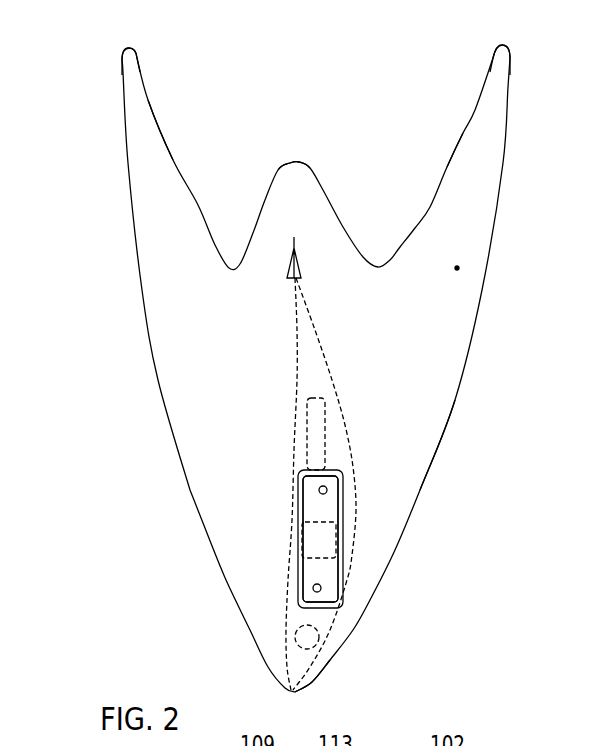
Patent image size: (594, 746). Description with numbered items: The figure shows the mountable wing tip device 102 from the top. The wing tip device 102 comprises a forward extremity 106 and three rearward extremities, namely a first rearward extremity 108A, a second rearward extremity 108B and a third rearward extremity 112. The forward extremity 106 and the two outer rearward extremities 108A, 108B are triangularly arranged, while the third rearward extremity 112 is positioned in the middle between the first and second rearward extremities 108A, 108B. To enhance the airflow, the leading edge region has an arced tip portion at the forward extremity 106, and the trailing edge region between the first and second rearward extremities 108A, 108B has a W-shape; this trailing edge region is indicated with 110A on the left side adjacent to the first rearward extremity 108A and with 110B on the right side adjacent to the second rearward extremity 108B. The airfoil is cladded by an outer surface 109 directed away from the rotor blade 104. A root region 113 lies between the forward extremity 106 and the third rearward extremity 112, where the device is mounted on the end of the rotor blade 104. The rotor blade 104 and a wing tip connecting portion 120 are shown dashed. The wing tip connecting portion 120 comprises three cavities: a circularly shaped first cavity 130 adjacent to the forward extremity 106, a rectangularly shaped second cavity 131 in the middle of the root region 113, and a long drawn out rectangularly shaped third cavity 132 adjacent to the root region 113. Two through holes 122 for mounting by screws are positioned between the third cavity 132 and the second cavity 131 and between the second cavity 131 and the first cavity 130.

The mountable wing tip device 102 is at (136, 406).
The rotor blade 104 is at (290, 590).
The forward extremity 106 is at (315, 678).
The first rearward extremity 108A is at (131, 72).
The second rearward extremity 108B is at (502, 83).
The outer surface 109 is at (457, 268).
The trailing edge region (left side) 110A is at (153, 130).
The trailing edge region (right side) 110B is at (468, 122).
The third rearward extremity 112 is at (294, 163).
The root region 113 is at (323, 511).
The wing tip connecting portion 120 is at (320, 539).
The through holes 122 is at (327, 490).
The first cavity 130 is at (319, 637).
The second cavity 131 is at (323, 543).
The third cavity 132 is at (313, 432).